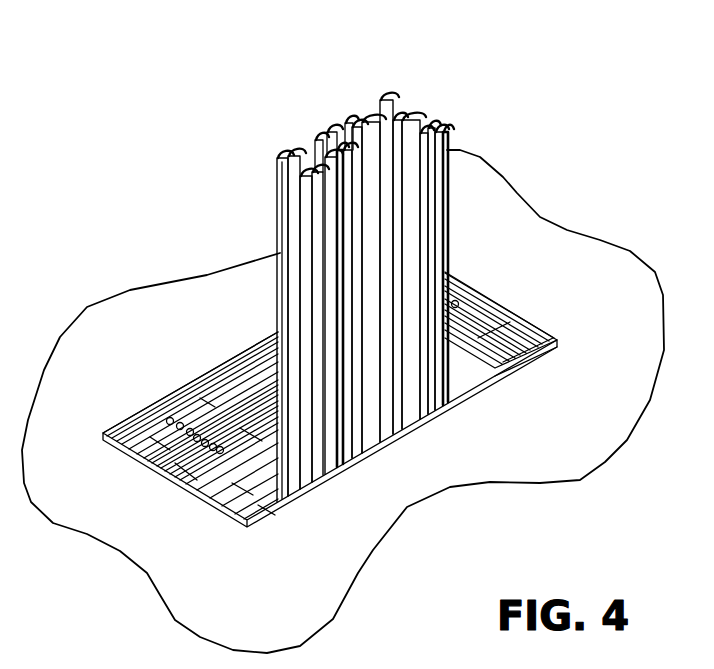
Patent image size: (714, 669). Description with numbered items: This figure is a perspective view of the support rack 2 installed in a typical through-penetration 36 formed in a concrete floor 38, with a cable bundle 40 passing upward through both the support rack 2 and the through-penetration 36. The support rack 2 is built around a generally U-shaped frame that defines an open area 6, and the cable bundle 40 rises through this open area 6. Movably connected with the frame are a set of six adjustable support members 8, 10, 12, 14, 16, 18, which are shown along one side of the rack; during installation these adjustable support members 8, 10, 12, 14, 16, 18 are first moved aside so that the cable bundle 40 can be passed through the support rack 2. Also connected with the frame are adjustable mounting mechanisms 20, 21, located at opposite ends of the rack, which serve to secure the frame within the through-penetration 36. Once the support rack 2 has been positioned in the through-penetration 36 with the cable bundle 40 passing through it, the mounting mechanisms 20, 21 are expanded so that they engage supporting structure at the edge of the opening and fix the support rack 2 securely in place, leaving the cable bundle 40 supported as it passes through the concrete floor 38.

The support rack 2 is at (203, 390).
The open area 6 is at (243, 427).
The adjustable support member 8 is at (178, 403).
The adjustable support member 10 is at (167, 417).
The adjustable support member 12 is at (178, 440).
The adjustable support member 14 is at (212, 438).
The adjustable support member 16 is at (242, 432).
The adjustable support member 18 is at (250, 430).
The adjustable mounting mechanism 20 is at (213, 446).
The adjustable mounting mechanism 21 is at (458, 300).
The through-penetration 36 is at (486, 376).
The concrete floor 38 is at (615, 306).
The cable bundle 40 is at (366, 97).